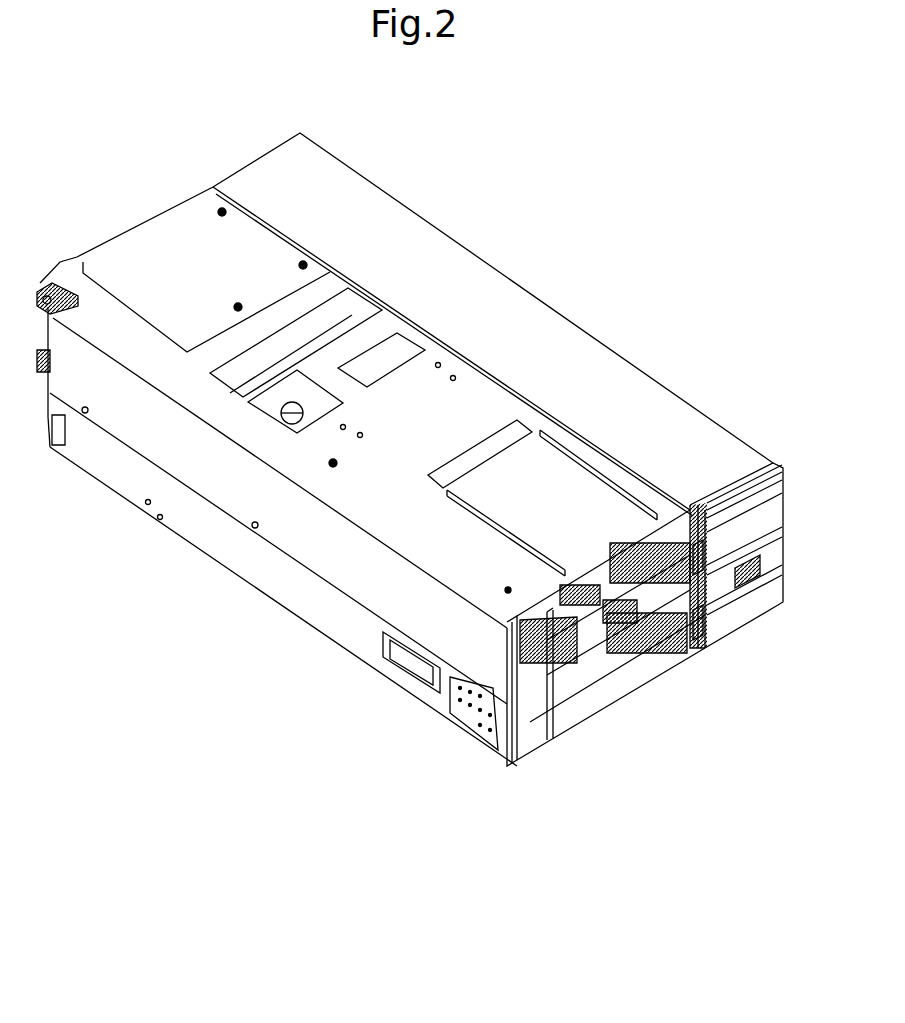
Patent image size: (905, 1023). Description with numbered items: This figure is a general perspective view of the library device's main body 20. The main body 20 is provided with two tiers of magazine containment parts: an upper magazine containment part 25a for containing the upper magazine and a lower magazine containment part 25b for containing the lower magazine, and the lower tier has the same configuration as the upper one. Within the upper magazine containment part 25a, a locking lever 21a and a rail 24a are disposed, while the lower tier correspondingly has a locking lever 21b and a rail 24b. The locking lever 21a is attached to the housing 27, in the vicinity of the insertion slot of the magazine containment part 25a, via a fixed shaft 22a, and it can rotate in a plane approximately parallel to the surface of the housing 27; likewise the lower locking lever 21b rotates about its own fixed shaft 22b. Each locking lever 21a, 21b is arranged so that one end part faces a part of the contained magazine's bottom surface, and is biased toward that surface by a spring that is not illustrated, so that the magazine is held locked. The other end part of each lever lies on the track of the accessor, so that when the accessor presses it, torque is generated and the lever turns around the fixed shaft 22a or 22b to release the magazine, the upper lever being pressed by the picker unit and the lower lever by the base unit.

The main body 20 is at (147, 185).
The locking lever 21a is at (640, 612).
The locking lever 21b is at (665, 655).
The fixed shaft 22a is at (713, 643).
The fixed shaft 22b is at (641, 640).
The rail 24a is at (643, 605).
The rail 24b is at (595, 628).
The magazine containment part 25a is at (480, 727).
The magazine containment part 25b is at (517, 762).
The housing 27 is at (230, 563).